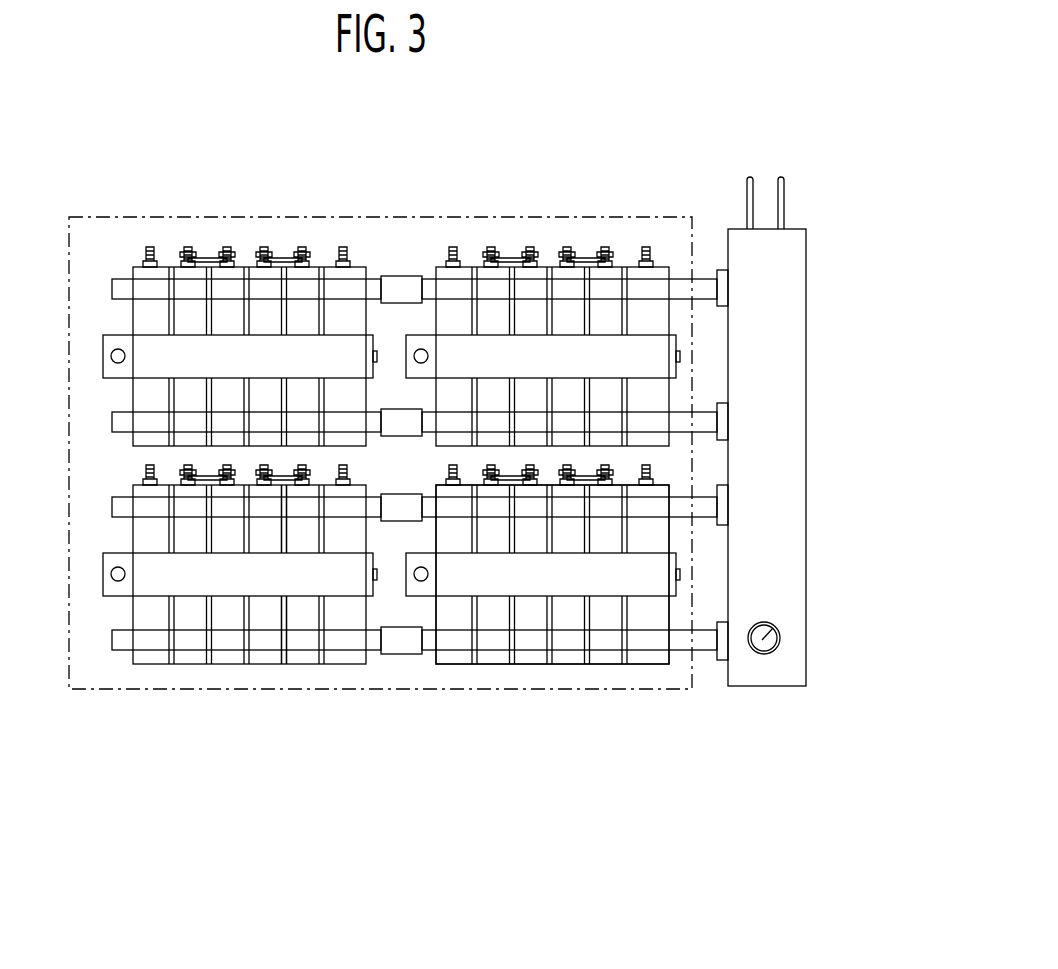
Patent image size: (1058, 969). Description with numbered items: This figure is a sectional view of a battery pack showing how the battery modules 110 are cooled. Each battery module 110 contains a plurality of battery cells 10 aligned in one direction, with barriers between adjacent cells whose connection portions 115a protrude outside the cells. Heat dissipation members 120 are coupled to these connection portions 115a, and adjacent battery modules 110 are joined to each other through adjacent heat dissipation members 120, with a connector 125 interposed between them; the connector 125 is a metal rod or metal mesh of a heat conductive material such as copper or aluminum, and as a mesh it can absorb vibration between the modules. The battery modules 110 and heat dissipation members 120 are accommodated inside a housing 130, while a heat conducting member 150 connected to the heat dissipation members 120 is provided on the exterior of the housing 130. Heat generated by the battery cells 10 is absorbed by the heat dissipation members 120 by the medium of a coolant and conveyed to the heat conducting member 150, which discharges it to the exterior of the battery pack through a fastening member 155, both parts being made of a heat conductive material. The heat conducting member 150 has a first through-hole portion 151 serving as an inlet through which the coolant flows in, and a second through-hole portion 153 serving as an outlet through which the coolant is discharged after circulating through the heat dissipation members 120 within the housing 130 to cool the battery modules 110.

The battery cell 10 is at (497, 662).
The battery module 110 is at (543, 635).
The connection portion 115a is at (283, 637).
The heat dissipation member 120 is at (340, 640).
The connector 125 is at (400, 654).
The housing 130 is at (493, 209).
The heat conducting member 150 is at (827, 323).
The first through-hole portion 151 is at (781, 630).
The second through-hole portion 153 is at (760, 185).
The fastening member 155 is at (717, 272).